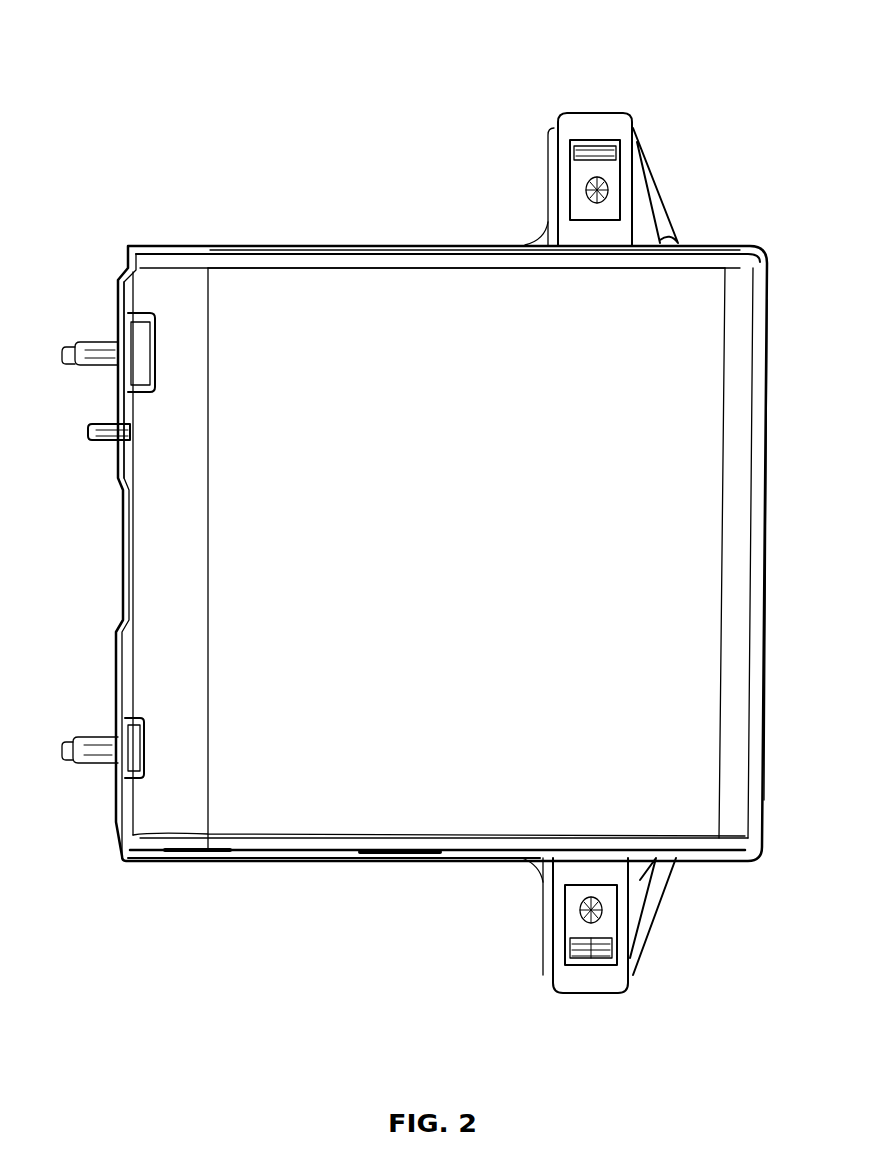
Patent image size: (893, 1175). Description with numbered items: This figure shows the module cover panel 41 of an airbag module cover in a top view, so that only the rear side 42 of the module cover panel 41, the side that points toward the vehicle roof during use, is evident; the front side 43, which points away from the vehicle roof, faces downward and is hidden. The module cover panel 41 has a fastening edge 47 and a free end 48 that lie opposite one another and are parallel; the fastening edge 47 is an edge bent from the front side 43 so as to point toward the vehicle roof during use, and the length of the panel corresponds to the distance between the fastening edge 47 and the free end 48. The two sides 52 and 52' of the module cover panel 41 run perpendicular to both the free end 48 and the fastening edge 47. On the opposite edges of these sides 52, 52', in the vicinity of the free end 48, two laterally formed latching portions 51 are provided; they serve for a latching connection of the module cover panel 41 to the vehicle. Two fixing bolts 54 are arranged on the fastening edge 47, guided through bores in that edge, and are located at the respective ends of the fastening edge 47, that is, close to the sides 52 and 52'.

The module cover panel 41 is at (743, 192).
The rear side 42 is at (455, 352).
The front side 43 is at (306, 352).
The fastening edge 47 is at (125, 268).
The free end 48 is at (763, 553).
The latching portions 51 is at (603, 127).
The side 52 is at (334, 917).
The side 52' is at (475, 198).
The fixing bolts 54 is at (100, 335).